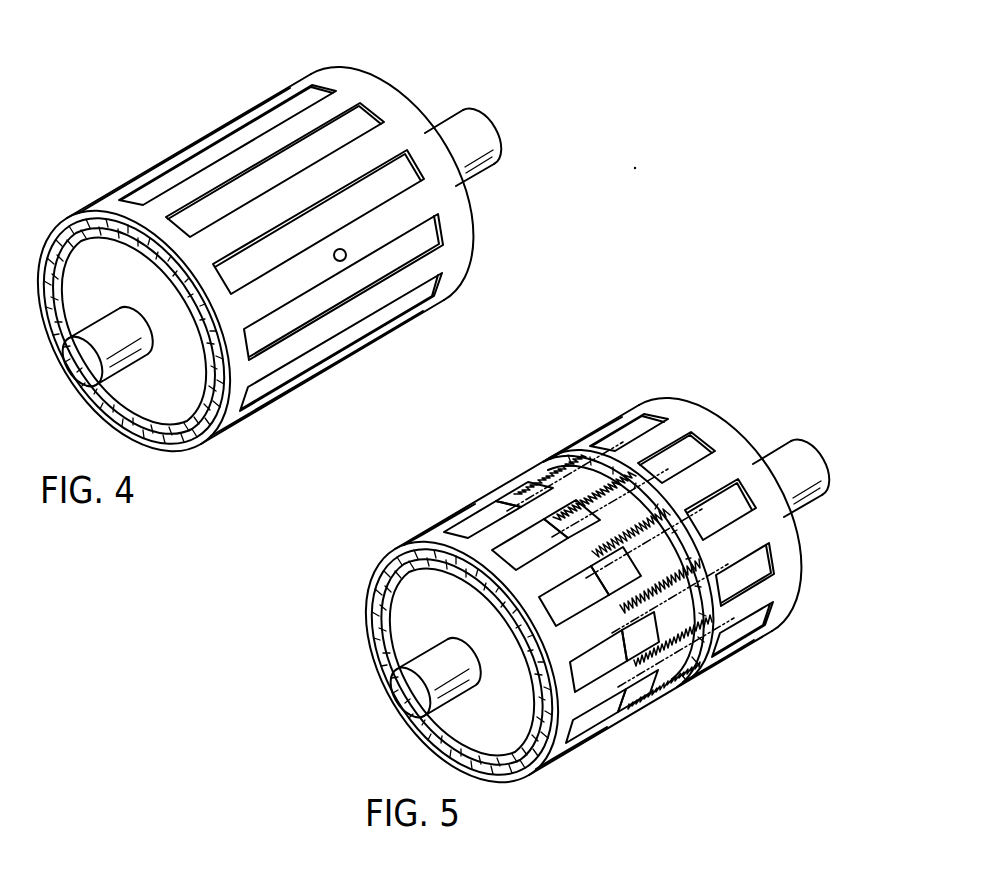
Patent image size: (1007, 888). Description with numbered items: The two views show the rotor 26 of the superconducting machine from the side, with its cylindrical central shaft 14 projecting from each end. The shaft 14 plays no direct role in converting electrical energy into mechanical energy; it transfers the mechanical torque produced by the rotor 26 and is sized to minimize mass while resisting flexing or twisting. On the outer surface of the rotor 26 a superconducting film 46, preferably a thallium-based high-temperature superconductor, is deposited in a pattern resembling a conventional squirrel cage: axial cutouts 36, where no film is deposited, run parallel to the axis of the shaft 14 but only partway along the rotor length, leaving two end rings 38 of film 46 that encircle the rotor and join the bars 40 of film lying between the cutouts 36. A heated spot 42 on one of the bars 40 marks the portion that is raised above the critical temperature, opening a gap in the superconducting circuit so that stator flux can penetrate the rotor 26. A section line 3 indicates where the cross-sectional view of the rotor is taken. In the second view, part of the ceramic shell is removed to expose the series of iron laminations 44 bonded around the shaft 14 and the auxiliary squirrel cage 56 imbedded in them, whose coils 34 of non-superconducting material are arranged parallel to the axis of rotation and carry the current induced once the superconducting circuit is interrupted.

In FIG. 4, the section line of FIG. 3 is at (315, 57).
In FIG. 4, the central shaft 14 is at (112, 392).
In FIG. 5, the central shaft 14 is at (436, 720).
In FIG. 4, the rotor 26 is at (281, 237).
In FIG. 5, the rotor 26 is at (607, 568).
In FIG. 5, the coils 34 is at (553, 488).
In FIG. 4, the cutouts 36 is at (215, 160).
In FIG. 5, the cutouts 36 is at (488, 517).
In FIG. 4, the rings 38 is at (463, 234).
In FIG. 5, the rings 38 is at (785, 566).
In FIG. 4, the bars 40 is at (362, 320).
In FIG. 5, the bars 40 is at (590, 705).
In FIG. 4, the heated spot 42 is at (346, 250).
In FIG. 5, the iron laminations 44 is at (656, 668).
In FIG. 4, the superconducting film 46 is at (97, 222).
In FIG. 5, the auxiliary squirrel cage 56 is at (532, 492).